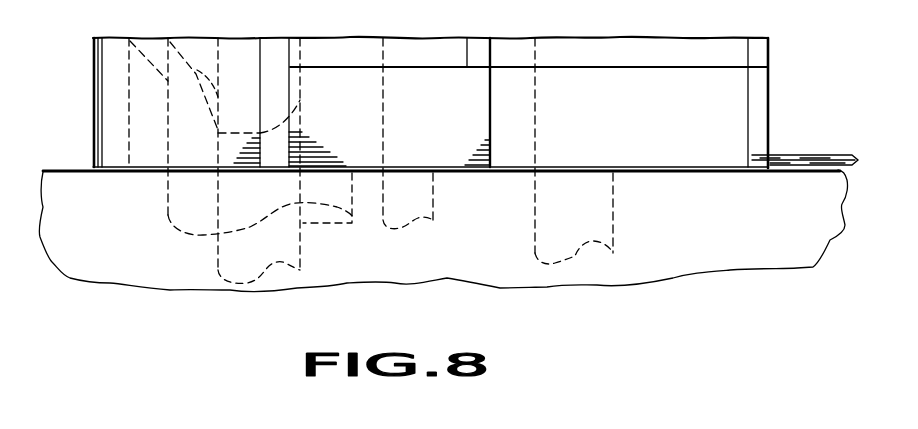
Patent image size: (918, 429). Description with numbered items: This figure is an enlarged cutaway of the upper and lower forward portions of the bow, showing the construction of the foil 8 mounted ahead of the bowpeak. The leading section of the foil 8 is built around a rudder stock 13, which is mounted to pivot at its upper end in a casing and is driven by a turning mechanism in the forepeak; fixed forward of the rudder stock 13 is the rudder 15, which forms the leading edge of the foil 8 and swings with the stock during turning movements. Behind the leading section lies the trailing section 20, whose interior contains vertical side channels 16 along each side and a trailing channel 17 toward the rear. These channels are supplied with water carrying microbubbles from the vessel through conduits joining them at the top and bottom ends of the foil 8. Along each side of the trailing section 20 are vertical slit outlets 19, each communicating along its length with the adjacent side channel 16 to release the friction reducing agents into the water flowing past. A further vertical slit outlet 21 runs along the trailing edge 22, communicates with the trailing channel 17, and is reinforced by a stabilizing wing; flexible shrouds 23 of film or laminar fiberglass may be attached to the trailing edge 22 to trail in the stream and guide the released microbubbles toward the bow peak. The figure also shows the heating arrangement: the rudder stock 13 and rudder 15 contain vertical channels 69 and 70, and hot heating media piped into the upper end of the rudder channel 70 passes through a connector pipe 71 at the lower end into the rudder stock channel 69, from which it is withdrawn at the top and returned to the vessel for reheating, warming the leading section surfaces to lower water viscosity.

The foil 8 is at (363, 150).
The rudder stock 13 is at (164, 153).
The rudder 15 is at (93, 104).
The vertical side channels 16 is at (384, 88).
The trailing channel 17 is at (535, 118).
The vertical slit outlets 19 is at (490, 97).
The trailing section 20 is at (655, 150).
The vertical slit outlet 21 is at (770, 99).
The trailing edge 22 is at (748, 96).
The shrouds 23 is at (834, 147).
The rudder stock channel 69 is at (219, 53).
The rudder channel 70 is at (158, 120).
The connector pipe 71 is at (235, 160).